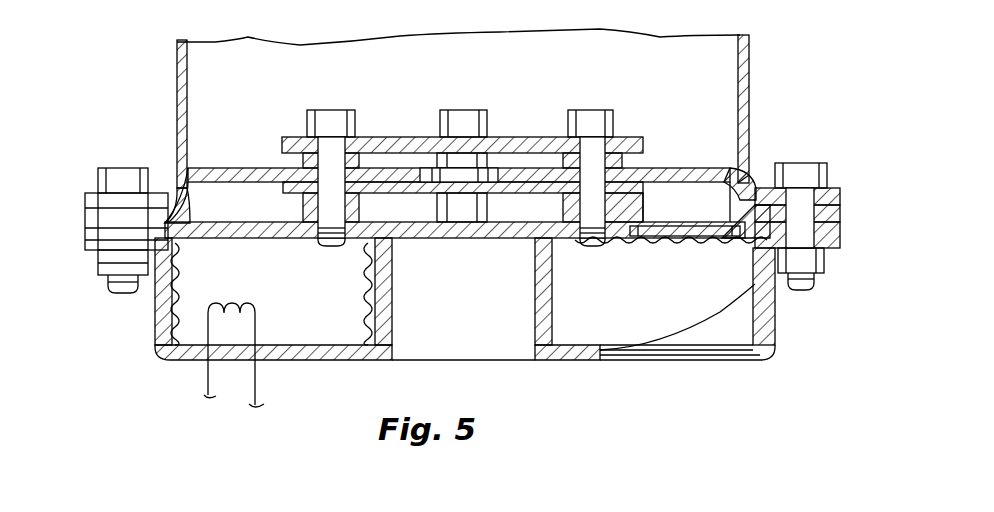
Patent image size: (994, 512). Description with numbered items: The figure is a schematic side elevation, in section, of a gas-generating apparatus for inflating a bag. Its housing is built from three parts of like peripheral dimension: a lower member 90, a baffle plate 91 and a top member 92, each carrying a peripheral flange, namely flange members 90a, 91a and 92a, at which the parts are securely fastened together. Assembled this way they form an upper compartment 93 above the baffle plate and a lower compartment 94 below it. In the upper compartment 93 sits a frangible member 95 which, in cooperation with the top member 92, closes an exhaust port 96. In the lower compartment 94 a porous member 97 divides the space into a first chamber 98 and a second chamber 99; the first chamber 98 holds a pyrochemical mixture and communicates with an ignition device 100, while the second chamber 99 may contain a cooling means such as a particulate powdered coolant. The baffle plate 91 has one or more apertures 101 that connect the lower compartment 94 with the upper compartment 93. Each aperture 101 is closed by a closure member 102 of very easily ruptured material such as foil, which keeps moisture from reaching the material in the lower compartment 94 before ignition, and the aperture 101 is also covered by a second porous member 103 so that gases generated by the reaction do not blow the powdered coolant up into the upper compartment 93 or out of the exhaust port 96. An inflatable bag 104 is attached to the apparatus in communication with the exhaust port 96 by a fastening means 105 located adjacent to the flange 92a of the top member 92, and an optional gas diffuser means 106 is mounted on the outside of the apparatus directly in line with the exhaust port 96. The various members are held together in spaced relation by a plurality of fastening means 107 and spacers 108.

The lower member 90 is at (775, 332).
The flange member 90a is at (836, 250).
The baffle plate 91 is at (472, 240).
The flange member 91a is at (840, 226).
The top member 92 is at (713, 170).
The flange member 92a is at (840, 212).
The upper compartment 93 is at (698, 212).
The lower compartment 94 is at (723, 298).
The frangible member 95 is at (280, 188).
The exhaust port 96 is at (433, 170).
The porous member 97 is at (160, 292).
The first chamber 98 is at (316, 292).
The second chamber 99 is at (598, 323).
The ignition device 100 is at (208, 382).
The aperture 101 is at (652, 240).
The closure member 102 is at (742, 186).
The second porous member 103 is at (700, 243).
The inflatable bag 104 is at (177, 96).
The fastening means 105 is at (830, 166).
The gas diffuser means 106 is at (638, 150).
The fastening means 107 is at (578, 112).
The spacers 108 is at (640, 152).